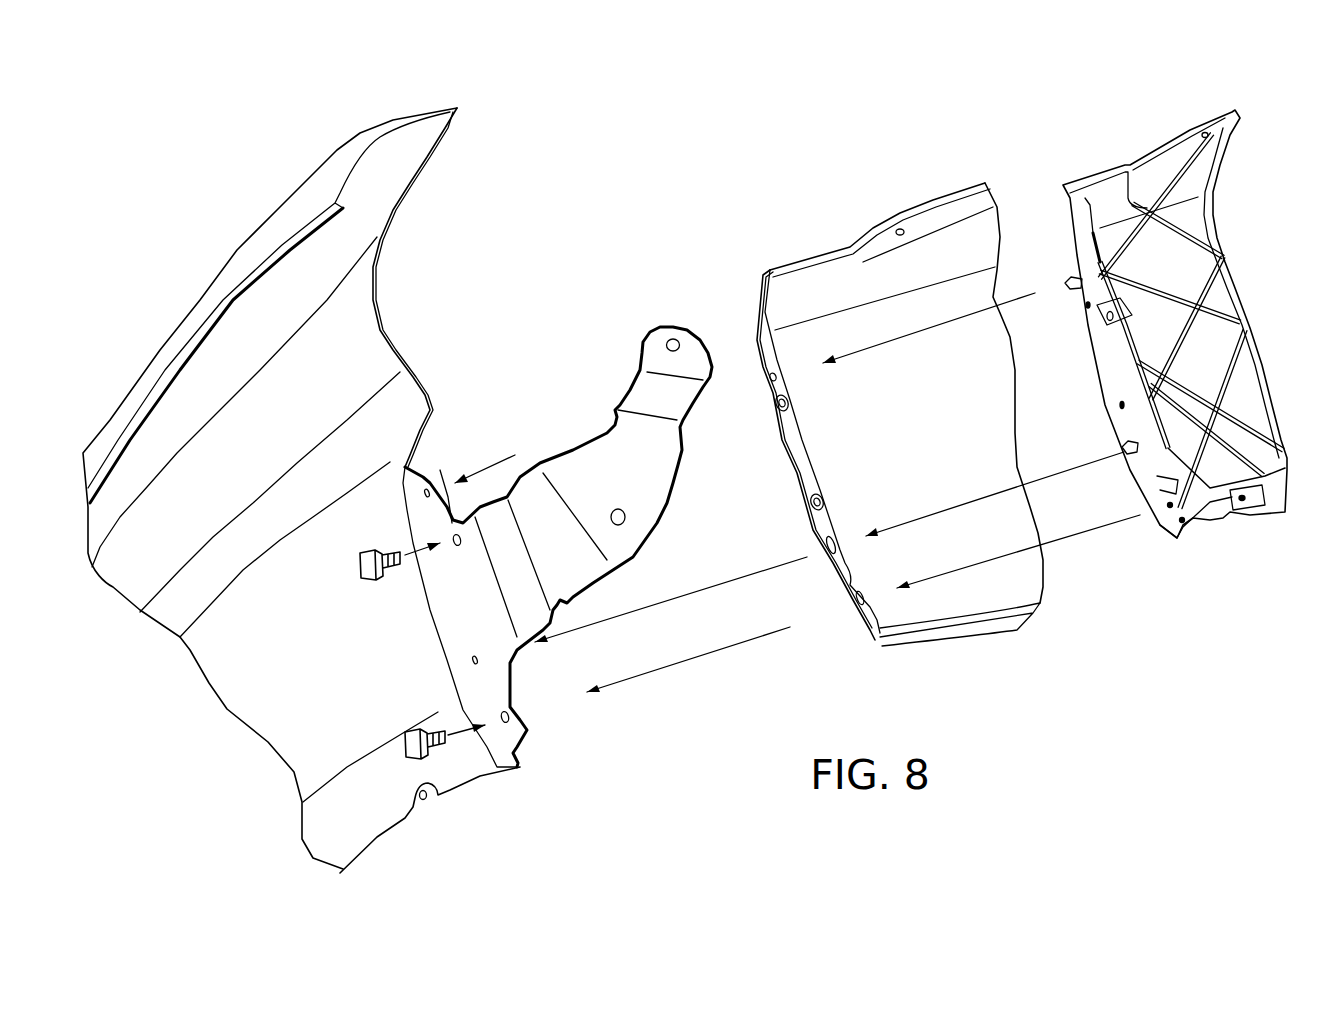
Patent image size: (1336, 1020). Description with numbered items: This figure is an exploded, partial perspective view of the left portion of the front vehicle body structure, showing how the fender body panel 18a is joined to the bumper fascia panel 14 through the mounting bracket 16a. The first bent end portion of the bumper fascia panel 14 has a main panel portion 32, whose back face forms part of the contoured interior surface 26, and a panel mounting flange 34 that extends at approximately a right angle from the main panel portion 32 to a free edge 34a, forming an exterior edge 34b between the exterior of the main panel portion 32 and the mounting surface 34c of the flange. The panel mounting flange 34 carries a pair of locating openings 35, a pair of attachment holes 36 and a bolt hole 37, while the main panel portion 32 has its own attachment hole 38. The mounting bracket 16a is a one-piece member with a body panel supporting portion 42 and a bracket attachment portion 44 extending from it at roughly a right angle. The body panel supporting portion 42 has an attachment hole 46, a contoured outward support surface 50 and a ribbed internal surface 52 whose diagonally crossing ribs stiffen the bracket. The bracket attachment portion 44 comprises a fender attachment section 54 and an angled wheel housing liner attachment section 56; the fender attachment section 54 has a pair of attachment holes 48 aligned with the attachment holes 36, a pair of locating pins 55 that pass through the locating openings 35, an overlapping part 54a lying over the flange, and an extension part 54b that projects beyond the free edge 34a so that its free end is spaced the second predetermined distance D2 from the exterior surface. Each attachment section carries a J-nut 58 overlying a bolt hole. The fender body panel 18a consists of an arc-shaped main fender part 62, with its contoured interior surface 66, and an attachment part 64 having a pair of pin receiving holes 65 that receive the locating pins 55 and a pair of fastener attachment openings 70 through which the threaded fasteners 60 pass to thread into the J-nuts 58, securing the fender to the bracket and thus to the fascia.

The bumper fascia panel 14 is at (870, 227).
The mounting bracket 16a is at (1287, 333).
The fender body panel 18a is at (367, 128).
The contoured interior surface 26 is at (985, 530).
The main panel portion 32 is at (907, 445).
The panel mounting flange 34 is at (815, 532).
The free edge 34a is at (813, 470).
The exterior edge 34b is at (842, 602).
The mounting surface 34c is at (847, 568).
The locating openings 35 is at (767, 378).
The attachment holes 36 is at (807, 503).
The bolt hole 37 is at (855, 604).
The attachment hole 38 is at (903, 233).
The body panel supporting portion 42 is at (1227, 223).
The bracket attachment portion 44 is at (1128, 583).
The attachment hole 46 is at (1222, 147).
The attachment holes 48 is at (1087, 310).
The contoured outward support surface 50 is at (1248, 453).
The ribbed internal surface 52 is at (1277, 407).
The fender attachment section 54 is at (1147, 497).
The overlapping part 54a is at (1077, 243).
The extension part 54b is at (1102, 280).
The locating pins 55 is at (1067, 282).
The wheel housing liner attachment section 56 is at (1217, 503).
The J-nut 58 is at (1133, 313).
The threaded fasteners 60 is at (357, 569).
The main fender part 62 is at (244, 673).
The attachment part 64 is at (460, 615).
The pin receiving holes 65 is at (427, 492).
The contoured interior surface 66 is at (393, 153).
The fastener attachment openings 70 is at (450, 538).
The second predetermined distance D2 is at (1104, 389).